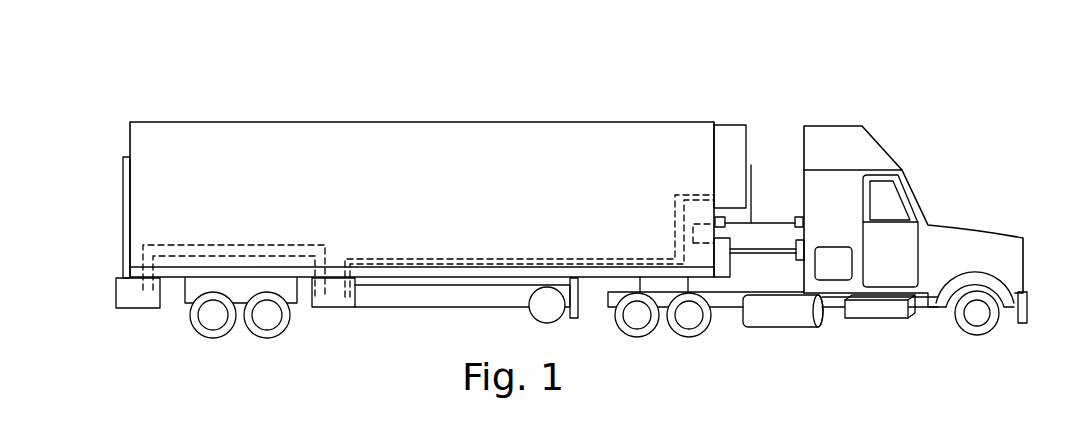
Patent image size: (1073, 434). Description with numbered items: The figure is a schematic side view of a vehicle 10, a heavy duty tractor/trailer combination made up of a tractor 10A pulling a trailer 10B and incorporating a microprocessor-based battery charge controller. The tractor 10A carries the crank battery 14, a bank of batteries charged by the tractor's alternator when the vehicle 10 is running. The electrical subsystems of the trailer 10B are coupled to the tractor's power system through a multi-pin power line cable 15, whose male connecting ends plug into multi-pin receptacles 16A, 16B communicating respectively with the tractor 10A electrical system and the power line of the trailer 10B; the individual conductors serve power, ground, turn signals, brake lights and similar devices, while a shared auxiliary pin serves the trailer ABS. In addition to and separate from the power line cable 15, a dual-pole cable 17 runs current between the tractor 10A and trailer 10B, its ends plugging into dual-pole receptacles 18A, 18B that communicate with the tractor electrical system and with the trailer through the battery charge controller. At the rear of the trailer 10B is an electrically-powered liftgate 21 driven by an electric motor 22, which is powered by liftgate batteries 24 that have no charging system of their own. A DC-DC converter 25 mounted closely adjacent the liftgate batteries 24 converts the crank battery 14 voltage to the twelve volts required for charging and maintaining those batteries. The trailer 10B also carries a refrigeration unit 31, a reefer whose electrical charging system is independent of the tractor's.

The vehicle 10 is at (982, 186).
The tractor 10A is at (885, 148).
The trailer 10B is at (430, 122).
The crank battery 14 is at (877, 313).
The power line cable 15 is at (751, 165).
The multi-pin receptacle 16A is at (797, 216).
The multi-pin receptacle 16B is at (721, 217).
The dual-pole cable 17 is at (742, 249).
The dual-pole receptacle 18A is at (803, 246).
The dual-pole receptacle 18B is at (731, 258).
The liftgate 21 is at (123, 242).
The electric motor 22 is at (138, 308).
The liftgate batteries 24 is at (317, 308).
The DC-DC converter 25 is at (347, 308).
The refrigeration unit 31 is at (737, 128).